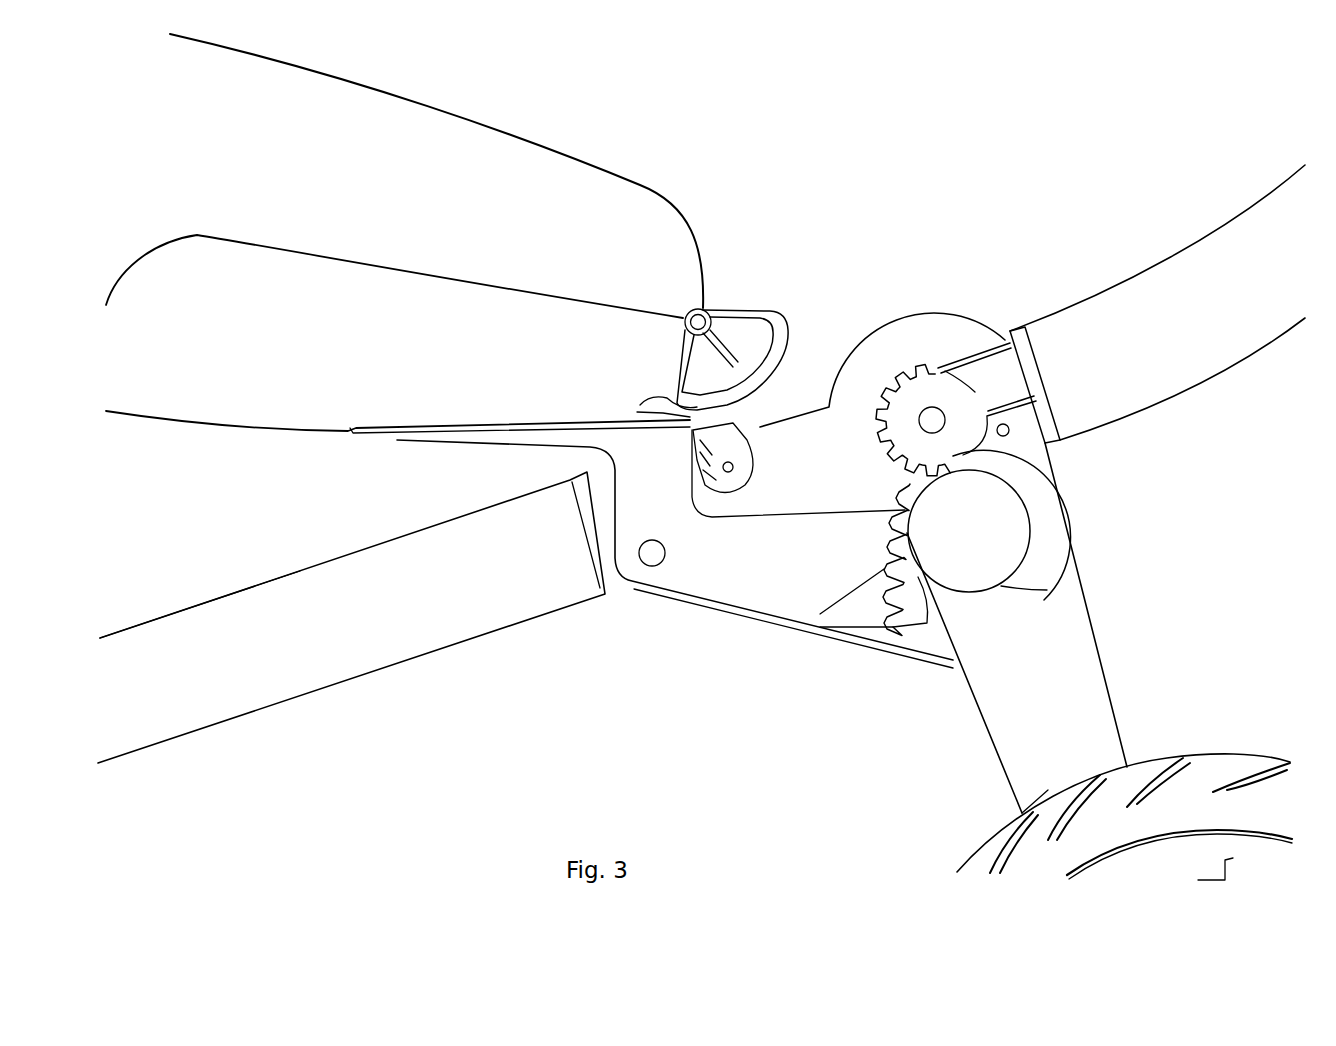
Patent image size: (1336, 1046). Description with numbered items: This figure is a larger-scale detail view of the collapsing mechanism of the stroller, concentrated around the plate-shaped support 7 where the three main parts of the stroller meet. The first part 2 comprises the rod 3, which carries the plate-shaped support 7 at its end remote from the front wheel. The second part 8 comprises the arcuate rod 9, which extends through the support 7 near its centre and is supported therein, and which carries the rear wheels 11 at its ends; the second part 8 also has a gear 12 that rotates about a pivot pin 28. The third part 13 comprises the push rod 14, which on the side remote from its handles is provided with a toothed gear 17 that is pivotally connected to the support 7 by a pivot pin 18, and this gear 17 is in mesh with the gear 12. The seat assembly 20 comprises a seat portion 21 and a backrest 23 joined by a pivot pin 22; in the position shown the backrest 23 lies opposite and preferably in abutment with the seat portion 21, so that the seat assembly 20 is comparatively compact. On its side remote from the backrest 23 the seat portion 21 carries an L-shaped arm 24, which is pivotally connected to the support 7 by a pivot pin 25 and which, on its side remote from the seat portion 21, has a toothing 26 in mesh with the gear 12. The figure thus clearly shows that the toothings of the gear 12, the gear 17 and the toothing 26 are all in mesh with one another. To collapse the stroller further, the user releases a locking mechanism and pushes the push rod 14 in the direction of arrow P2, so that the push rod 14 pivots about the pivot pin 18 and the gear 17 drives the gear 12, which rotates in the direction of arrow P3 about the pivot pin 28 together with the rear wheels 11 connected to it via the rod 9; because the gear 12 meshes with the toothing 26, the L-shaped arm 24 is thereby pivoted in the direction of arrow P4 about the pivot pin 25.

The first part 2 is at (258, 750).
The rod 3 is at (397, 630).
The plate-shaped support 7 is at (811, 450).
The second part 8 is at (1135, 686).
The arcuate rod 9 is at (1060, 653).
The rear wheels 11 is at (1223, 770).
The gear 12 is at (1047, 590).
The third part 13 is at (1219, 402).
The push rod 14 is at (1132, 325).
The gear 17 is at (887, 392).
The pivot pin 18 is at (931, 410).
The seat assembly 20 is at (484, 98).
The seat portion 21 is at (495, 338).
The pivot pin 22 is at (710, 310).
The backrest 23 is at (625, 226).
The L-shaped arm 24 is at (730, 575).
The pivot pin 25 is at (652, 567).
The toothing 26 is at (885, 568).
The pivot pin 28 is at (1040, 520).
The arrow P2 is at (870, 157).
The arrow P3 is at (865, 747).
The arrow P4 is at (637, 511).